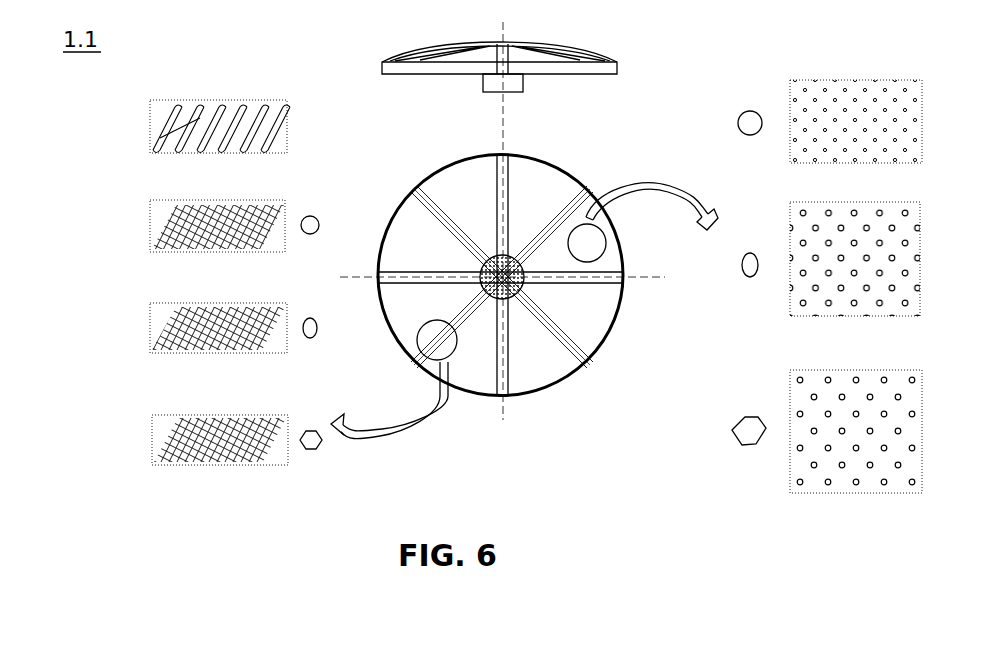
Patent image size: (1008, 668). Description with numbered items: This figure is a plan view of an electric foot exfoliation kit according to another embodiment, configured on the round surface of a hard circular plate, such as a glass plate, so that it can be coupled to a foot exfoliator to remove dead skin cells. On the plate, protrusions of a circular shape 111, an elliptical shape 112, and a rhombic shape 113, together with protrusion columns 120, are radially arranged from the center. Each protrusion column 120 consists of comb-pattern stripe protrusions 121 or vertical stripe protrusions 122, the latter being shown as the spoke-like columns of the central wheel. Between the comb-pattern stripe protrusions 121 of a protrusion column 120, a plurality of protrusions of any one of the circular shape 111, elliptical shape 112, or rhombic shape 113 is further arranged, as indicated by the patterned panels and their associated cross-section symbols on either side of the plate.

The protrusion column 120 is at (150, 140).
The comb-pattern stripe protrusions 121 is at (165, 322).
The vertical stripe protrusions 122 is at (493, 207).
The circular shape 111 is at (301, 218).
The elliptical shape 112 is at (302, 322).
The rhombic shape 113 is at (300, 436).